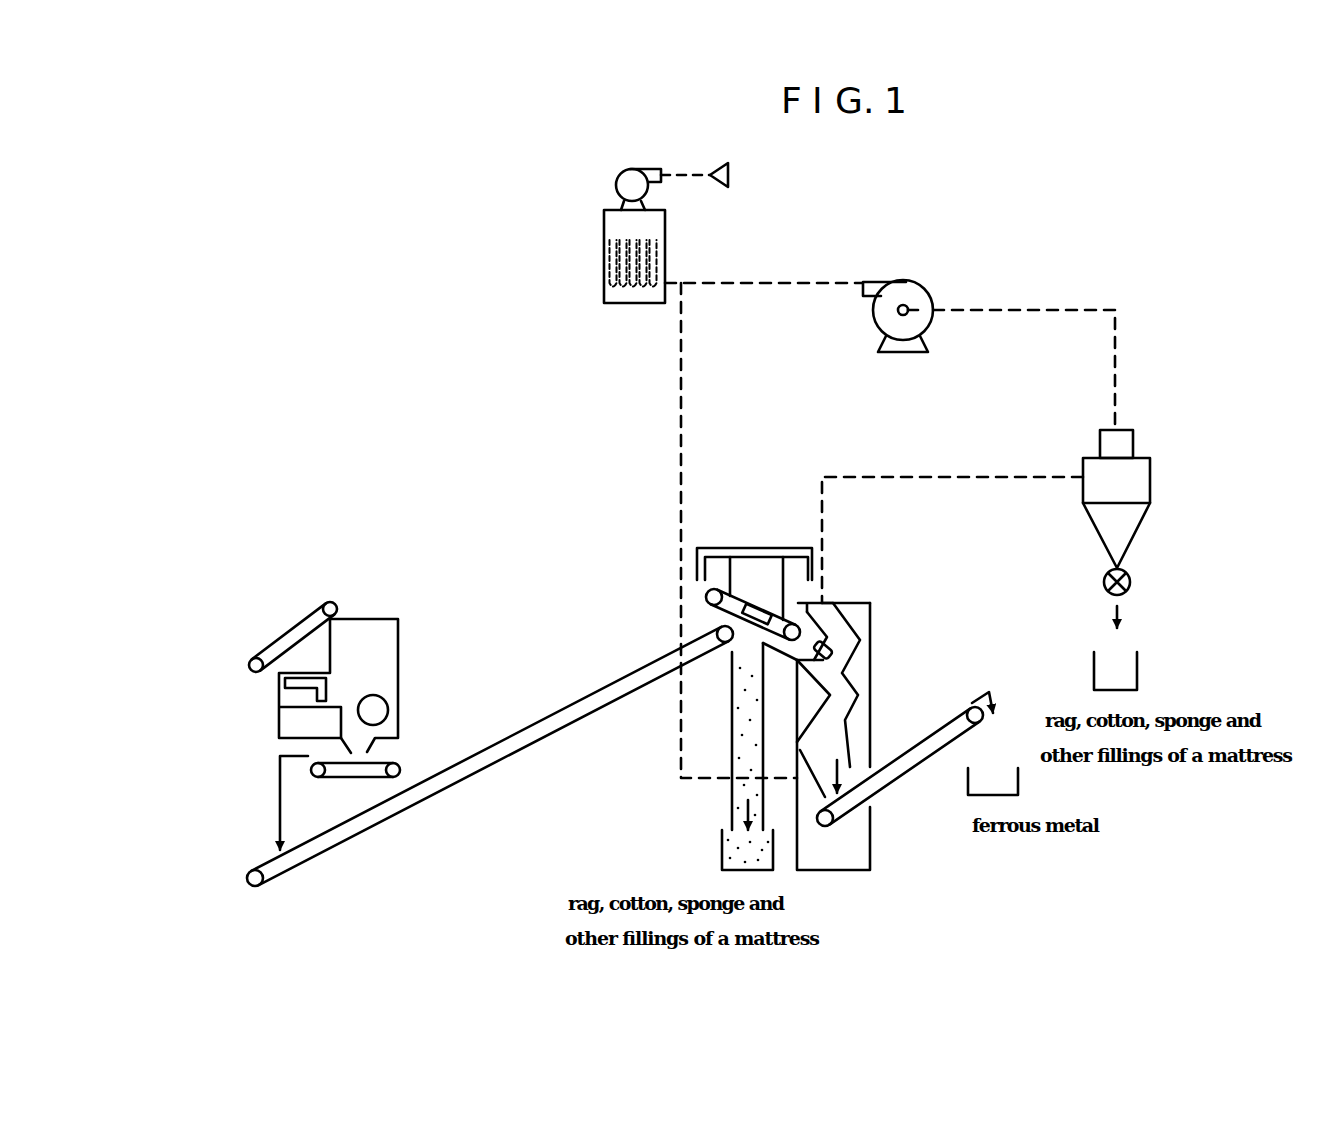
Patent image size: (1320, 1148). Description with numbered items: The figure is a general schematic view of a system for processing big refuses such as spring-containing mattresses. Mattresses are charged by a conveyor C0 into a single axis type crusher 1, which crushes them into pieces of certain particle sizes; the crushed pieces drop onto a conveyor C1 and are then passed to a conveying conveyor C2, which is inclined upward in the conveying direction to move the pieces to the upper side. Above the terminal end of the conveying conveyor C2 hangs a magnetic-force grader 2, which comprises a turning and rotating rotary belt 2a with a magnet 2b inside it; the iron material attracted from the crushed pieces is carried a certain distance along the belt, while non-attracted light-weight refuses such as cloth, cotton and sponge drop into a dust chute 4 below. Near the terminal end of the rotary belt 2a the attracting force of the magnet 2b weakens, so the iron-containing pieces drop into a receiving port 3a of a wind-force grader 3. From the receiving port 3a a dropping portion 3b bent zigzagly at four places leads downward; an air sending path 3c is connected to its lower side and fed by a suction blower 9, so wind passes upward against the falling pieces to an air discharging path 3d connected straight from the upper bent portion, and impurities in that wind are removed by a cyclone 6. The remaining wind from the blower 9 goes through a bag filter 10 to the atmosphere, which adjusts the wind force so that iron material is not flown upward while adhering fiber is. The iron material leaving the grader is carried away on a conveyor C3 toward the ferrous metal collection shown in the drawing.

The mattress opener / crusher 1 is at (326, 637).
The magnetic separator 2 is at (700, 558).
The magnetic separator conveyor 2a is at (722, 604).
The magnet 2b is at (758, 604).
The wind separator 3 is at (784, 683).
The rotary distributor 3a is at (816, 650).
The zigzag air channel wall 3b is at (845, 702).
The inclined chute wall 3c is at (800, 749).
The air inlet of wind separator 3d is at (828, 604).
The discharge chute 4 is at (740, 798).
The cyclone 6 is at (1151, 463).
The blower fan 9 is at (918, 279).
The bag filter 10 is at (601, 229).
The feed conveyor C0 is at (254, 675).
The discharge conveyor C1 is at (358, 774).
The inclined transfer conveyor C2 is at (499, 752).
The ferrous metal conveyor C3 is at (905, 765).